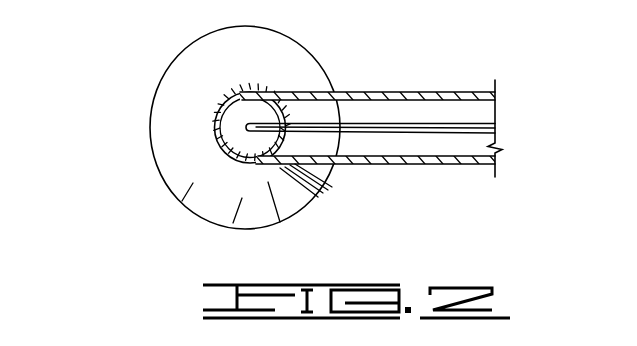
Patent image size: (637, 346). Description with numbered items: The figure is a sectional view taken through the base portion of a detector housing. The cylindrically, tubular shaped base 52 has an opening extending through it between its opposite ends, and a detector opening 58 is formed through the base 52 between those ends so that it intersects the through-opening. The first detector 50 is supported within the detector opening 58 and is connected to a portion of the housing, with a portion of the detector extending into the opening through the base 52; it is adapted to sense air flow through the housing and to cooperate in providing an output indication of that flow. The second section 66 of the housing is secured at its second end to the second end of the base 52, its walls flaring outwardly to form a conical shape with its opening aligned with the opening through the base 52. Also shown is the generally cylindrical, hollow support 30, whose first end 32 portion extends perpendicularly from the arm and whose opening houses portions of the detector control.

The second section 66 is at (205, 53).
The first end 32 is at (257, 90).
The base 52 is at (218, 124).
The first detector 50 is at (247, 128).
The detector opening 58 is at (287, 120).
The support 30 is at (450, 92).